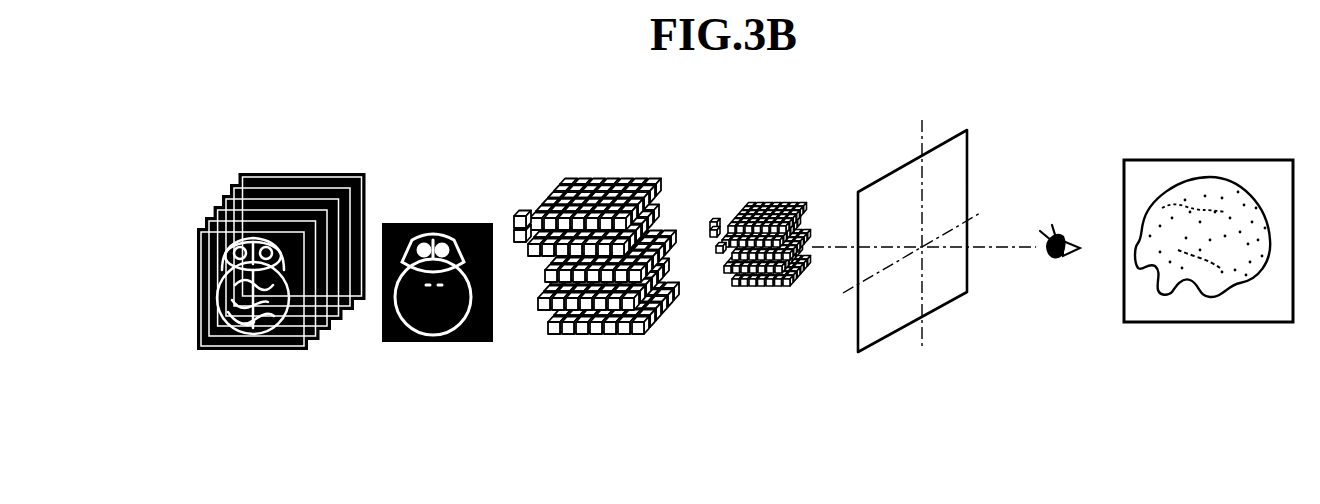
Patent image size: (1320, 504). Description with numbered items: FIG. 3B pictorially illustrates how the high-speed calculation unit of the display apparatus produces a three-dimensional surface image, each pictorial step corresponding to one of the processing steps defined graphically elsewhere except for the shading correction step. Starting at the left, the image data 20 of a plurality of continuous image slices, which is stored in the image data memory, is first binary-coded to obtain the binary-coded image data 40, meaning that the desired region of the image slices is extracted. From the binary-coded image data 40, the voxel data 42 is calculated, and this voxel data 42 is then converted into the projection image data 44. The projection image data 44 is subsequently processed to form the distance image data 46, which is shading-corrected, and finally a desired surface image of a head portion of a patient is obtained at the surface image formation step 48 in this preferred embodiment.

The image data 20 is at (300, 173).
The binary-coded image data 40 is at (423, 224).
The voxel data 42 is at (598, 178).
The projection image data 44 is at (757, 200).
The distance image data 46 is at (968, 147).
The surface image formation step 48 is at (1245, 158).